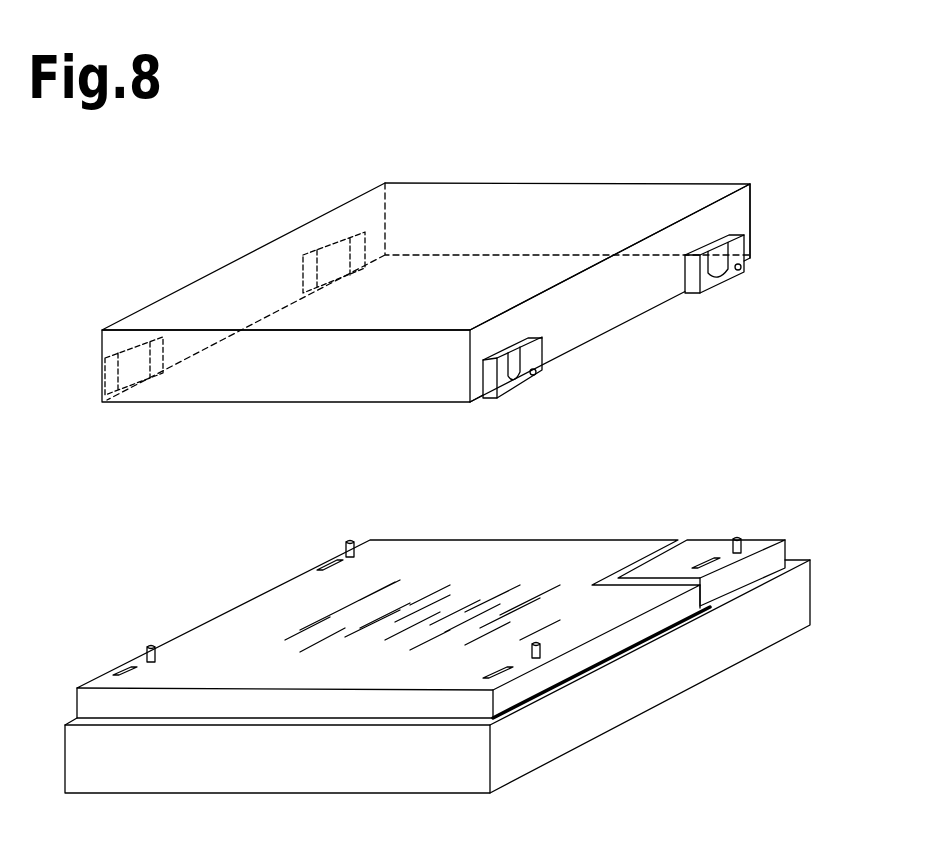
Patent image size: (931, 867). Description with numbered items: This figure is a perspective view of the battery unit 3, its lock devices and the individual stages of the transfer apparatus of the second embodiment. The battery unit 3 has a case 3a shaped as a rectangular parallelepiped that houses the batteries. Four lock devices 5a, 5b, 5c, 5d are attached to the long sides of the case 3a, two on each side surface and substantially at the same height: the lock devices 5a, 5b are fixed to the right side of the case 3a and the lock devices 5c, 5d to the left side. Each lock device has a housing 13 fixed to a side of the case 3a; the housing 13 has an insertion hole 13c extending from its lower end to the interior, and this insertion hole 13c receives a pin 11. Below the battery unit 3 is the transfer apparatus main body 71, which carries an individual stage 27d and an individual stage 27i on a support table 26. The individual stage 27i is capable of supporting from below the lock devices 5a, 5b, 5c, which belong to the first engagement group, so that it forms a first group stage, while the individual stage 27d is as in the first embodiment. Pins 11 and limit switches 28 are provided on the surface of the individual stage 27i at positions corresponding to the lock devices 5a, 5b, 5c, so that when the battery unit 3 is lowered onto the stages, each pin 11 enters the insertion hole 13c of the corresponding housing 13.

The battery unit 3 is at (458, 270).
The case 3a is at (596, 193).
The lock device 5a is at (121, 345).
The lock device 5b is at (348, 228).
The lock device 5c is at (481, 367).
The lock device 5d is at (733, 224).
The housing 13 is at (540, 352).
The insertion hole 13c is at (540, 378).
The pin 11 is at (150, 645).
The limit switch 28 is at (118, 666).
The individual stage 27i is at (490, 556).
The individual stage 27d is at (786, 556).
The support table 26 is at (707, 662).
The transfer apparatus main body 71 is at (463, 658).